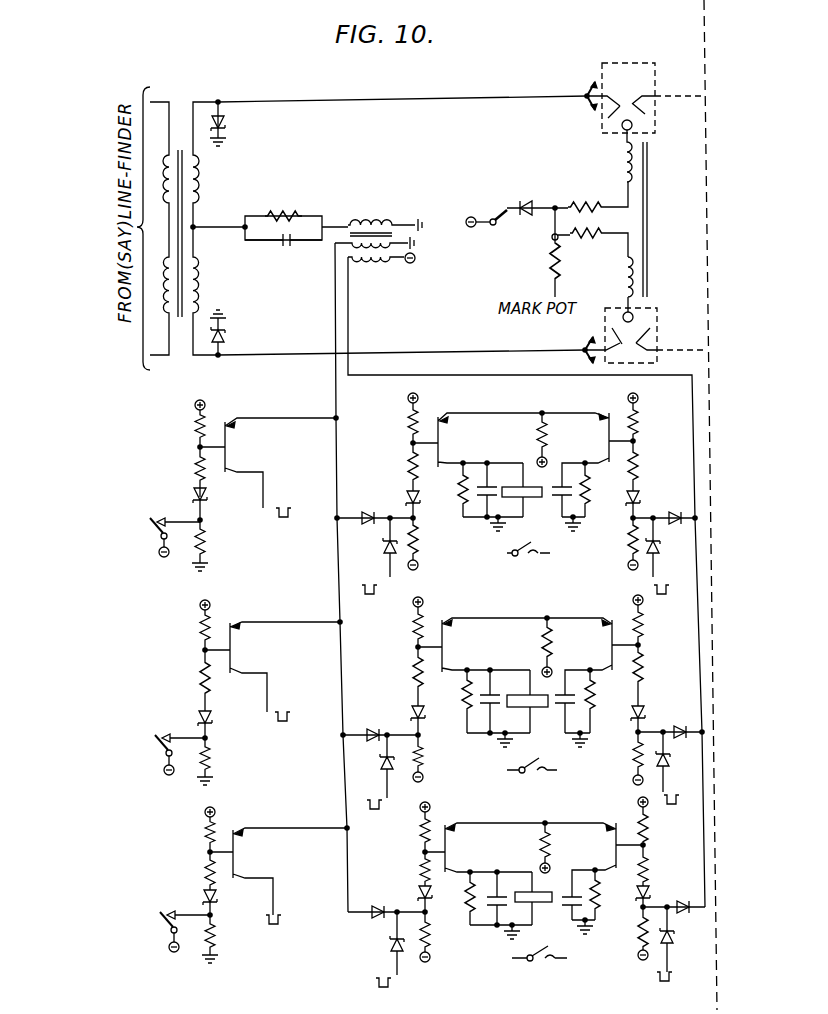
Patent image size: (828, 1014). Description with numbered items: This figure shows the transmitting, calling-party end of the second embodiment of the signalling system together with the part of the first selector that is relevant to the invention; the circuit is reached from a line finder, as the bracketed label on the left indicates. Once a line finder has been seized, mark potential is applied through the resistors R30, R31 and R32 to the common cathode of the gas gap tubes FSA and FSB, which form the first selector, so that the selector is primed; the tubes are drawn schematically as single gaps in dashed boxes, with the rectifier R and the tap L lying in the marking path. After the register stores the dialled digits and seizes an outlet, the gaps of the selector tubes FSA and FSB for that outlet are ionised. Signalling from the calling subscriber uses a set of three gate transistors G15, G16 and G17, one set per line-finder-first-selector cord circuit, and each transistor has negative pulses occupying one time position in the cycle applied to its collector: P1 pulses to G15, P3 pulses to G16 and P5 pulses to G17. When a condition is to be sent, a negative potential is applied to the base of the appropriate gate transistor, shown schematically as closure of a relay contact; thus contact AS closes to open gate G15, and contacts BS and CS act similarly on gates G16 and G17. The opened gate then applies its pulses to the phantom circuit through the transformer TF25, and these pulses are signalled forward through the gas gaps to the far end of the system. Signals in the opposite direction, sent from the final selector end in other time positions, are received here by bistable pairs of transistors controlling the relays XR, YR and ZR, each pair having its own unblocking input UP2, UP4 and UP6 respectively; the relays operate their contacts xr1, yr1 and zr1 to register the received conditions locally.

The transformer TF25 is at (378, 230).
The rectifier with switch R is at (510, 216).
The resistor R30 is at (531, 252).
The resistor R31 is at (591, 197).
The resistor R32 is at (593, 244).
The potentiometer tap L is at (600, 296).
The first selector gas gap tube FSA is at (646, 112).
The first selector gas gap tube FSB is at (645, 310).
The gate transistor G15 is at (264, 485).
The gate transistor G16 is at (268, 692).
The gate transistor G17 is at (274, 885).
The negative pulses P1 is at (286, 521).
The negative pulses P3 is at (285, 727).
The negative pulses P5 is at (276, 933).
The unblocking pulse input UP2 is at (525, 559).
The unblocking pulse input UP4 is at (533, 774).
The unblocking pulse input UP6 is at (534, 951).
The relay XR is at (524, 495).
The relay YR is at (528, 707).
The relay ZR is at (532, 903).
The relay contact xr1 is at (533, 546).
The relay contact yr1 is at (537, 760).
The relay contact zr1 is at (544, 950).
The relay contact AS is at (162, 535).
The switch BS is at (165, 752).
The switch CS is at (172, 929).